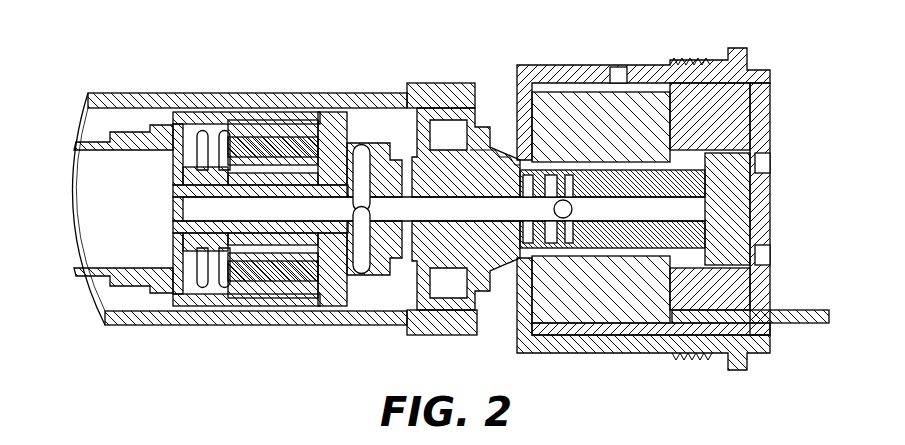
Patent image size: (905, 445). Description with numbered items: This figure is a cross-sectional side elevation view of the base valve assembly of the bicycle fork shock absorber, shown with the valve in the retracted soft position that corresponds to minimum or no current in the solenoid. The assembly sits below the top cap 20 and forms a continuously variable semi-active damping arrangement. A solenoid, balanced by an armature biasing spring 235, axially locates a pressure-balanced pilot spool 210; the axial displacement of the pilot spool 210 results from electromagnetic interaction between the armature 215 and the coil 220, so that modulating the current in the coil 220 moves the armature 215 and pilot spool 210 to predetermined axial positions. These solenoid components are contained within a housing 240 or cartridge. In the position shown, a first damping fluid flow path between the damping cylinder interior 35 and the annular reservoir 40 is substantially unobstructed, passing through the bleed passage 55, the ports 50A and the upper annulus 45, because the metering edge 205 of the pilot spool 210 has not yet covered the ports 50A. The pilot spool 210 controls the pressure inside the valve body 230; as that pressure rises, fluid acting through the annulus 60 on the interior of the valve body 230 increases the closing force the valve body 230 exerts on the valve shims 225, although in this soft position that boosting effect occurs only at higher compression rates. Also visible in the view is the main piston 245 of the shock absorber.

The top cap 20 is at (748, 353).
The damping cylinder interior 35 is at (125, 199).
The annular reservoir 40 is at (97, 123).
The upper annulus 45 is at (376, 301).
The ports 50A is at (400, 172).
The bleed passage 55 is at (190, 203).
The annulus 60 is at (341, 130).
The metering edge 205 is at (395, 228).
The pilot spool 210 is at (551, 240).
The armature 215 is at (757, 115).
The coil 220 is at (585, 82).
The valve shims 225 is at (268, 110).
The valve body 230 is at (302, 148).
The armature biasing spring 235 is at (546, 150).
The housing 240 is at (432, 249).
The main piston 245 is at (284, 127).